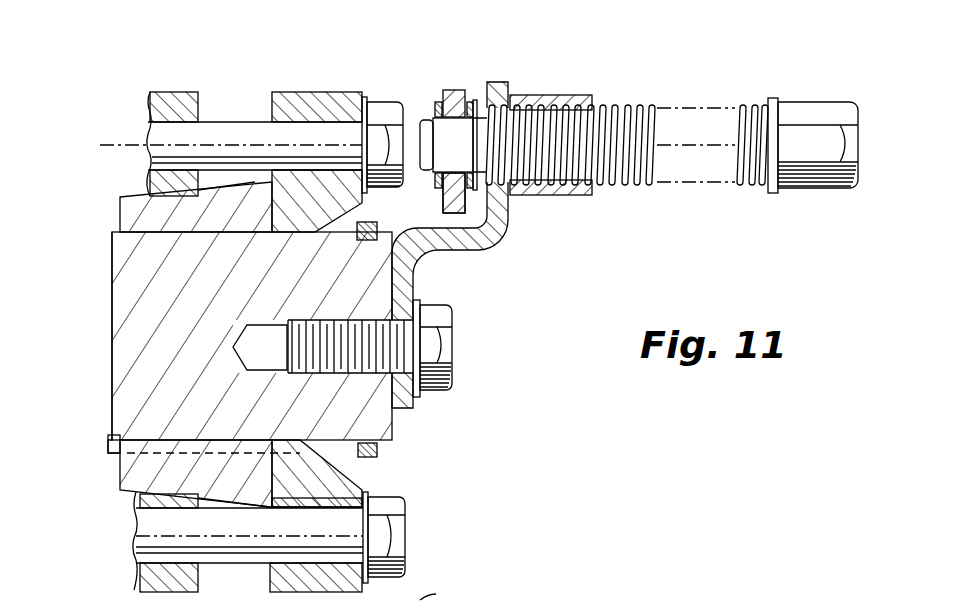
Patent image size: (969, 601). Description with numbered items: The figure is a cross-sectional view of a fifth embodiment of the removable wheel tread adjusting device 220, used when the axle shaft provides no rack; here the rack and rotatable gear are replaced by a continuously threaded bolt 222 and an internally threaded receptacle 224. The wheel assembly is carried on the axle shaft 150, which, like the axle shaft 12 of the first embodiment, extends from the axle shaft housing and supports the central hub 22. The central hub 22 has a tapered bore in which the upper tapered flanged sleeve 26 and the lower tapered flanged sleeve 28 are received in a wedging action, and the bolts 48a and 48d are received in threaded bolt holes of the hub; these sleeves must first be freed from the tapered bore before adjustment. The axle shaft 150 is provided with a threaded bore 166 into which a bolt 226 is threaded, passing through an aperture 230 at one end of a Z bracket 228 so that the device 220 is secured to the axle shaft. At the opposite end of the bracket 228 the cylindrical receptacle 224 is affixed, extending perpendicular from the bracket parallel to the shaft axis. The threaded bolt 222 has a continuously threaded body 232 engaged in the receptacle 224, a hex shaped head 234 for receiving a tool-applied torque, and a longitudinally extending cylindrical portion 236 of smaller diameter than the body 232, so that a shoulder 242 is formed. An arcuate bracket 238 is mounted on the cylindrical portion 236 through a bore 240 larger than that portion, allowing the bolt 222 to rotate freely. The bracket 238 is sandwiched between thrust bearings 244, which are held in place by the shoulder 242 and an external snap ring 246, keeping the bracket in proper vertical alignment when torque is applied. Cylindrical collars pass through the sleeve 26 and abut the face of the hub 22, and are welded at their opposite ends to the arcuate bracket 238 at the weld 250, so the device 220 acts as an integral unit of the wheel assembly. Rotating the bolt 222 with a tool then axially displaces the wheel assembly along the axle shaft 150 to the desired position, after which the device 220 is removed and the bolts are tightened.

The axle shaft 12 is at (117, 165).
The central hub 22 is at (179, 92).
The upper tapered flanged sleeve 26 is at (315, 86).
The lower tapered flanged sleeve 28 is at (374, 483).
The bolt 48a is at (227, 130).
The bolt 48d is at (410, 533).
The axle shaft 150 is at (192, 313).
The threaded bore 166 is at (330, 355).
The removable wheel tread adjusting device 220 is at (607, 229).
The threaded bolt 222 is at (640, 193).
The internally threaded receptacle 224 is at (593, 100).
The bolt 226 is at (453, 330).
The Z bracket 228 is at (468, 252).
The aperture 230 is at (410, 358).
The continuously threaded body 232 is at (647, 108).
The hex shaped head 234 is at (817, 102).
The cylindrical portion 236 is at (382, 138).
The arcuate bracket 238 is at (453, 87).
The bore 240 is at (450, 140).
The shoulder 242 is at (465, 200).
The thrust bearings 244 is at (440, 100).
The external snap ring 246 is at (425, 172).
The weld 250 is at (420, 600).